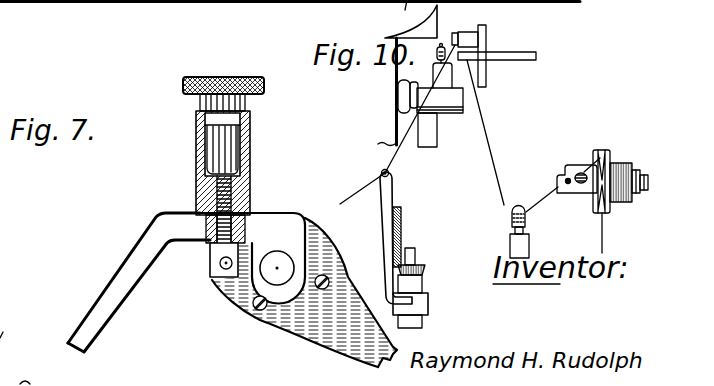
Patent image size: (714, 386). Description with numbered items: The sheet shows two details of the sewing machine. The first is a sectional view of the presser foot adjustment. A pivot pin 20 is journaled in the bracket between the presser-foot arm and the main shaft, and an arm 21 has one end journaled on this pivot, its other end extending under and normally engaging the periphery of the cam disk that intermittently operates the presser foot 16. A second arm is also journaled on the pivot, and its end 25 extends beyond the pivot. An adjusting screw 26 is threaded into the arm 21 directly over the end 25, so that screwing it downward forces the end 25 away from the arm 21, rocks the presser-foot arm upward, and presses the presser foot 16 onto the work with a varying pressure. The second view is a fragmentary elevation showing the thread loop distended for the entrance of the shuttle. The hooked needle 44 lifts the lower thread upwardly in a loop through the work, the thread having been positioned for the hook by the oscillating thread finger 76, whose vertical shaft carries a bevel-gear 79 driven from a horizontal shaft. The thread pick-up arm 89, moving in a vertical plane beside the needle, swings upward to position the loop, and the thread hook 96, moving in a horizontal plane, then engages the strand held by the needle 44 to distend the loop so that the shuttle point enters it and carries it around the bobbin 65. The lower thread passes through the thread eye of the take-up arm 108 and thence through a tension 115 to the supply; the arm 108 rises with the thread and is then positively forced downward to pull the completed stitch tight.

In FIG. 10, the presser foot 16 is at (443, 107).
In FIG. 7, the pivot pin 20 is at (277, 272).
In FIG. 7, the arm 21 is at (113, 302).
In FIG. 7, the end of arm 25 is at (230, 288).
In FIG. 7, the adjusting screw 26 is at (185, 90).
In FIG. 10, the needle 44 is at (455, 45).
In FIG. 10, the bobbin 65 is at (420, 22).
In FIG. 10, the thread finger 76 is at (383, 224).
In FIG. 10, the bevel-gear 79 is at (425, 272).
In FIG. 10, the thread pick-up arm 89 is at (488, 38).
In FIG. 10, the thread hook 96 is at (522, 60).
In FIG. 10, the arm 108 is at (517, 243).
In FIG. 10, the tension 115 is at (600, 194).